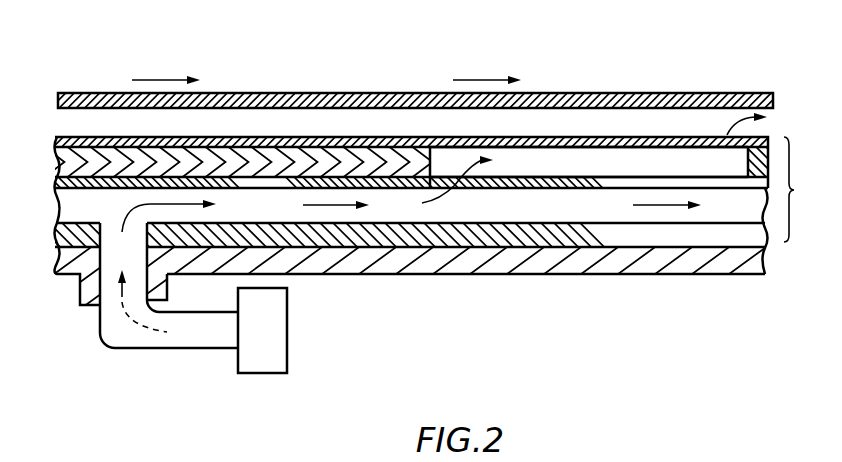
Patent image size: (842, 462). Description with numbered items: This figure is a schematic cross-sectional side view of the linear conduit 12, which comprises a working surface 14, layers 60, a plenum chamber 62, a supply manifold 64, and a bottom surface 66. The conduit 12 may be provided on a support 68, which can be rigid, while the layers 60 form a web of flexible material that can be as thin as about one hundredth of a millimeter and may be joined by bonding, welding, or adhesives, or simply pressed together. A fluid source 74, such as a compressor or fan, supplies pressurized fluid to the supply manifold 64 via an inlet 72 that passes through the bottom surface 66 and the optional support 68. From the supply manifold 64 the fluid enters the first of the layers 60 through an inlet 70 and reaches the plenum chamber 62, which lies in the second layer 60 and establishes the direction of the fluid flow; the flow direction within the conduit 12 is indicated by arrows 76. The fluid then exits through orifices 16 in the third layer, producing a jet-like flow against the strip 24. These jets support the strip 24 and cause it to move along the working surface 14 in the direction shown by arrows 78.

The linear conduit 12 is at (808, 189).
The working surface 14 is at (340, 137).
The orifices 16 is at (700, 158).
The strip 24 is at (640, 93).
The layers 60 is at (247, 160).
The plenum chamber 62 is at (547, 160).
The supply manifold 64 is at (68, 203).
The bottom surface 66 is at (502, 238).
The support 68 is at (590, 262).
The inlet 70 is at (457, 185).
The inlet 72 is at (65, 258).
The fluid source 74 is at (272, 355).
The arrows 76 is at (318, 205).
The arrows 78 is at (475, 80).